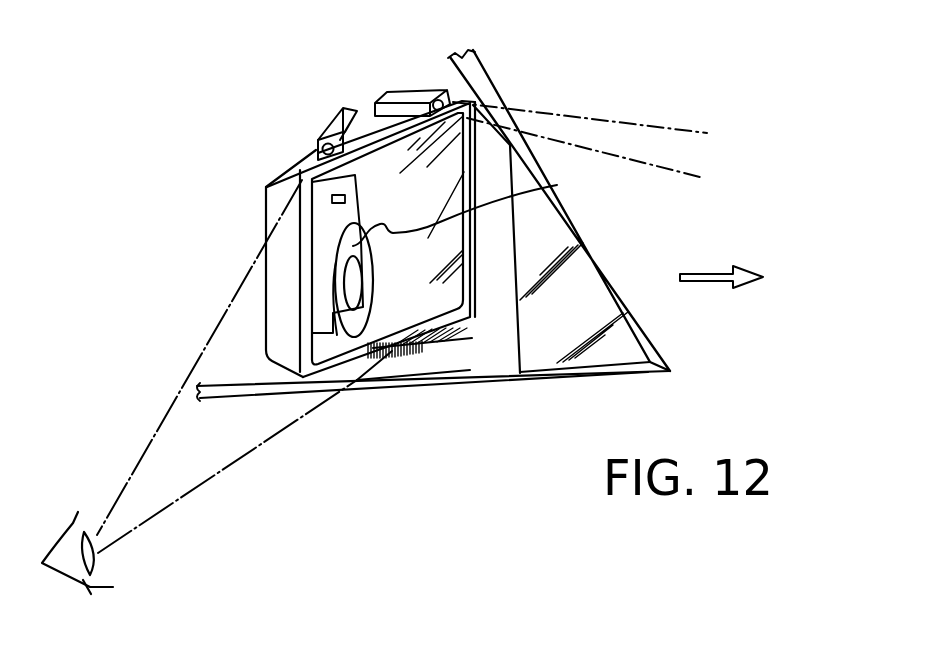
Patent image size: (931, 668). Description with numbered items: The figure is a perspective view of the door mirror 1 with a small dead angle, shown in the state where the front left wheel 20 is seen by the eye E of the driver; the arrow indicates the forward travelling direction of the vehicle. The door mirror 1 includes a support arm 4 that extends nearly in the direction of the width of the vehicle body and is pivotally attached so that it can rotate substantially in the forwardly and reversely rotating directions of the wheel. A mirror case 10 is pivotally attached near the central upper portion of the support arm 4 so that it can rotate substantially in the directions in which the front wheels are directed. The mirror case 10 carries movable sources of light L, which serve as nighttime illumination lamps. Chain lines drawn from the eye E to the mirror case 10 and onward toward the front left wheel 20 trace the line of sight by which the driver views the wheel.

The door mirror 1 is at (246, 160).
The mirror case 10 is at (288, 248).
The front left wheel 20 is at (557, 185).
The support arm 4 is at (492, 352).
The movable sources of light L is at (338, 120).
The eye E is at (95, 588).